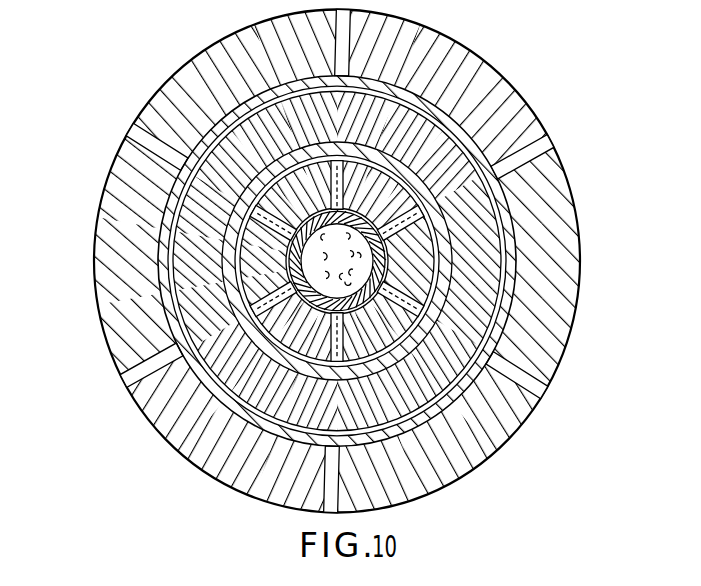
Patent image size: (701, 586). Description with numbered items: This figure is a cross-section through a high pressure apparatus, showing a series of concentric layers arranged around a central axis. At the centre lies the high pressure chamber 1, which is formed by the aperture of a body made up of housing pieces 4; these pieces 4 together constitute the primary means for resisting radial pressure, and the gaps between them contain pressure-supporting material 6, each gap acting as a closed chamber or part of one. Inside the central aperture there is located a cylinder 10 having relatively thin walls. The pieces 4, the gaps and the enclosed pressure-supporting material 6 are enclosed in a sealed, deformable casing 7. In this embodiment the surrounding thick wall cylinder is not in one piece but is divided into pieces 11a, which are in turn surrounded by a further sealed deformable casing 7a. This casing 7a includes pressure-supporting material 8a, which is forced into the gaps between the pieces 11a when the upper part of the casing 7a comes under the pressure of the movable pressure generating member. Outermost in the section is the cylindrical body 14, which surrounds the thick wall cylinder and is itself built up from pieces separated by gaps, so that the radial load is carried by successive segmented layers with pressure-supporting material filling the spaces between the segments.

The high pressure chamber 1 is at (222, 257).
The pieces 4 is at (272, 219).
The pressure-supporting material 6 is at (246, 255).
The sealed, deformable casing 7 is at (392, 260).
The sealed deformable casing 7a is at (417, 261).
The pressure-supporting material 8a is at (287, 261).
The cylinder 10 is at (186, 158).
The pieces 11a is at (551, 132).
The cylindrical body 14 is at (318, 261).